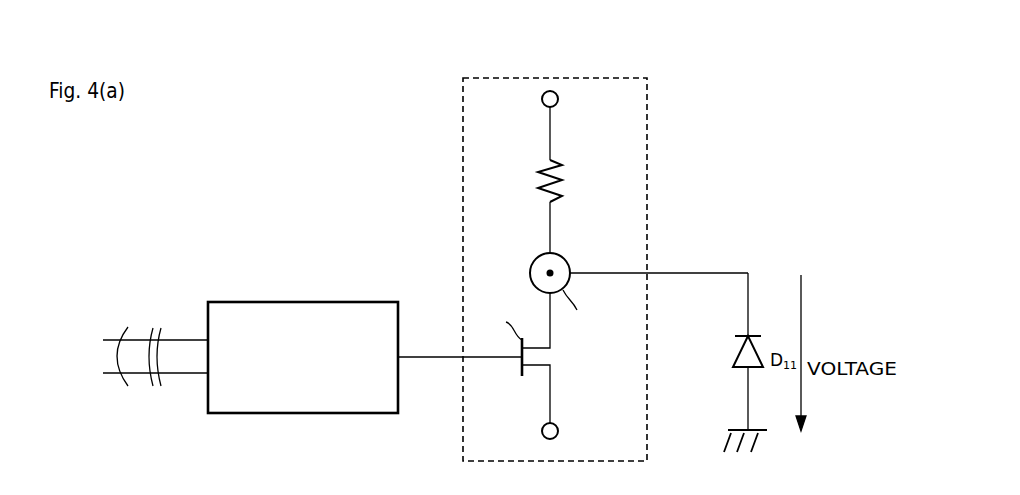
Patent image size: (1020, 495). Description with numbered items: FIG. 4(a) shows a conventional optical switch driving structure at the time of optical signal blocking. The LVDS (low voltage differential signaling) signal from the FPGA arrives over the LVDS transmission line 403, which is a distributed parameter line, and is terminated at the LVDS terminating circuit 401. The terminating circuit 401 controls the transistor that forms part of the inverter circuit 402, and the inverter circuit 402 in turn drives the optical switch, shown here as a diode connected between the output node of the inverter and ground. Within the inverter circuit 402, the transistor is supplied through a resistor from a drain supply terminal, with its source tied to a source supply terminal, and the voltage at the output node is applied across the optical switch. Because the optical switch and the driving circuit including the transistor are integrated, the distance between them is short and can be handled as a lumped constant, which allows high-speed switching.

The LVDS terminating circuit 401 is at (304, 302).
The inverter circuit 402 is at (648, 89).
The LVDS transmission line 403 is at (121, 327).